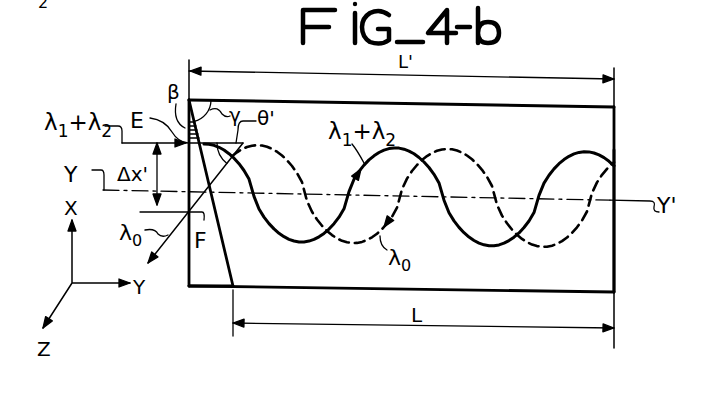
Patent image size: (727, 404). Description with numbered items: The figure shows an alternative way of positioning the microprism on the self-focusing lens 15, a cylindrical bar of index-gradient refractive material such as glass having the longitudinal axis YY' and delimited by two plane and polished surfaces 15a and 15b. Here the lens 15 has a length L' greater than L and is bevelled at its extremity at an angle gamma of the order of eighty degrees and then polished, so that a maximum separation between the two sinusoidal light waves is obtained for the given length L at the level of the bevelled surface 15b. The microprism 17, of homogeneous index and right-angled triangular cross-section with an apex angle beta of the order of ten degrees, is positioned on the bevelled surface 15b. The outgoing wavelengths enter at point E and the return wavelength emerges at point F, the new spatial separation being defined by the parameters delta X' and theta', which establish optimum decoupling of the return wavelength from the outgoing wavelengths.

The self-focusing lens 15 is at (617, 131).
The plane and polished surface 15a is at (614, 243).
The bevelled surface 15b is at (226, 250).
The microprism 17 is at (207, 284).